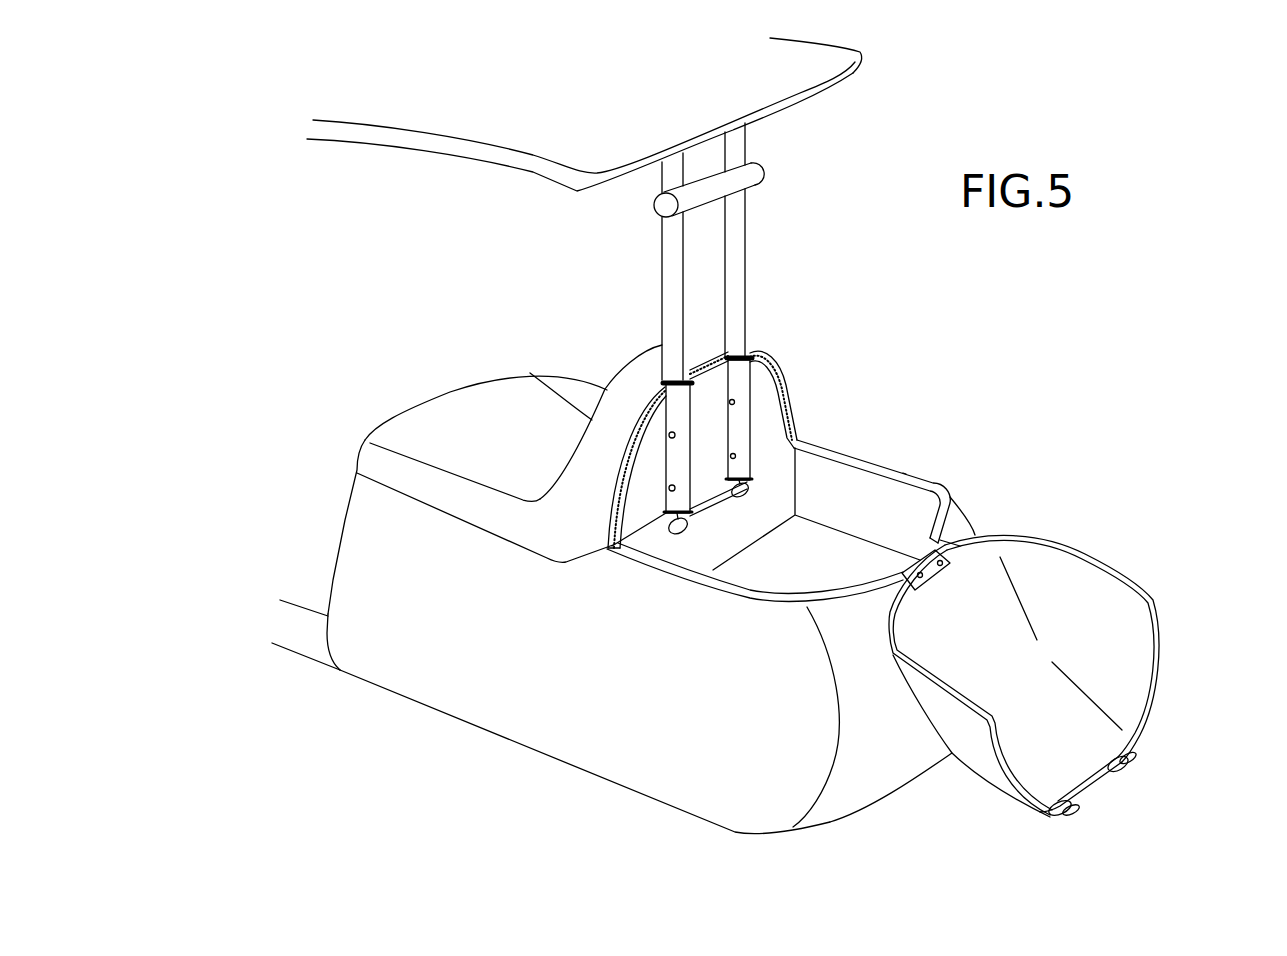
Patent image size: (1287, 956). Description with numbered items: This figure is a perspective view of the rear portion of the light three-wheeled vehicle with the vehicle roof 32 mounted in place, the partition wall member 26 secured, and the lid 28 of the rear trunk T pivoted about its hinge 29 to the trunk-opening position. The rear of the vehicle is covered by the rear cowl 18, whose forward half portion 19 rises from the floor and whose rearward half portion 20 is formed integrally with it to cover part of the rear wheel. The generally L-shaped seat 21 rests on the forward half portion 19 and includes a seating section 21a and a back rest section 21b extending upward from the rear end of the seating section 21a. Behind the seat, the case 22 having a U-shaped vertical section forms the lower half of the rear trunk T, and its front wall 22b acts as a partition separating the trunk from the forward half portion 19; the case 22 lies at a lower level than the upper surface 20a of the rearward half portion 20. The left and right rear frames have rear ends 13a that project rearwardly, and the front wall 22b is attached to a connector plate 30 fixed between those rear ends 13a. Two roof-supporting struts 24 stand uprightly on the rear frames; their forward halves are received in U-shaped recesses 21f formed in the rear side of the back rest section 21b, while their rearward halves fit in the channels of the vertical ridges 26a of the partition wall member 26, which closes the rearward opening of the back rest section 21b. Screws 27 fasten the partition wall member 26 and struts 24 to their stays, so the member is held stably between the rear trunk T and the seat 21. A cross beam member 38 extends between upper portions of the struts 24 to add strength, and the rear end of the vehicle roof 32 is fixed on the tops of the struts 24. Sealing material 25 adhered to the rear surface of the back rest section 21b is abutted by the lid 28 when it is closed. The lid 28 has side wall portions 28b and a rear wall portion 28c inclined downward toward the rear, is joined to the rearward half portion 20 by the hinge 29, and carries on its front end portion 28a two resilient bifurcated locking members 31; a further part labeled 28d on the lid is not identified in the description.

The rear frame upper extension 13a is at (717, 490).
The rear cowl 18 is at (366, 532).
The forward half portion 19 is at (387, 662).
The rearward half portion 20 is at (867, 793).
The upper surface 20a is at (918, 508).
The seat 21 is at (399, 414).
The seating section 21a is at (481, 429).
The back rest section 21b is at (530, 373).
The U-shaped recess 21f is at (740, 356).
The case 22 is at (850, 497).
The front wall 22b is at (778, 475).
The roof-supporting strut 24 is at (740, 215).
The sealing material 25 is at (762, 343).
The partition wall member 26 is at (762, 385).
The vertical ridge 26a is at (740, 423).
The screw 27 is at (667, 488).
The lid 28 is at (1083, 580).
The front end portion 28a is at (1108, 785).
The side wall portion 28b is at (1130, 620).
The rear wall portion 28c is at (1030, 690).
The door tab 28d is at (962, 532).
The hinge 29 is at (930, 567).
The connector plate 30 is at (713, 490).
The locking member 31 is at (1135, 756).
The vehicle roof 32 is at (747, 80).
The cross beam member 38 is at (731, 183).
The rear trunk T is at (940, 482).